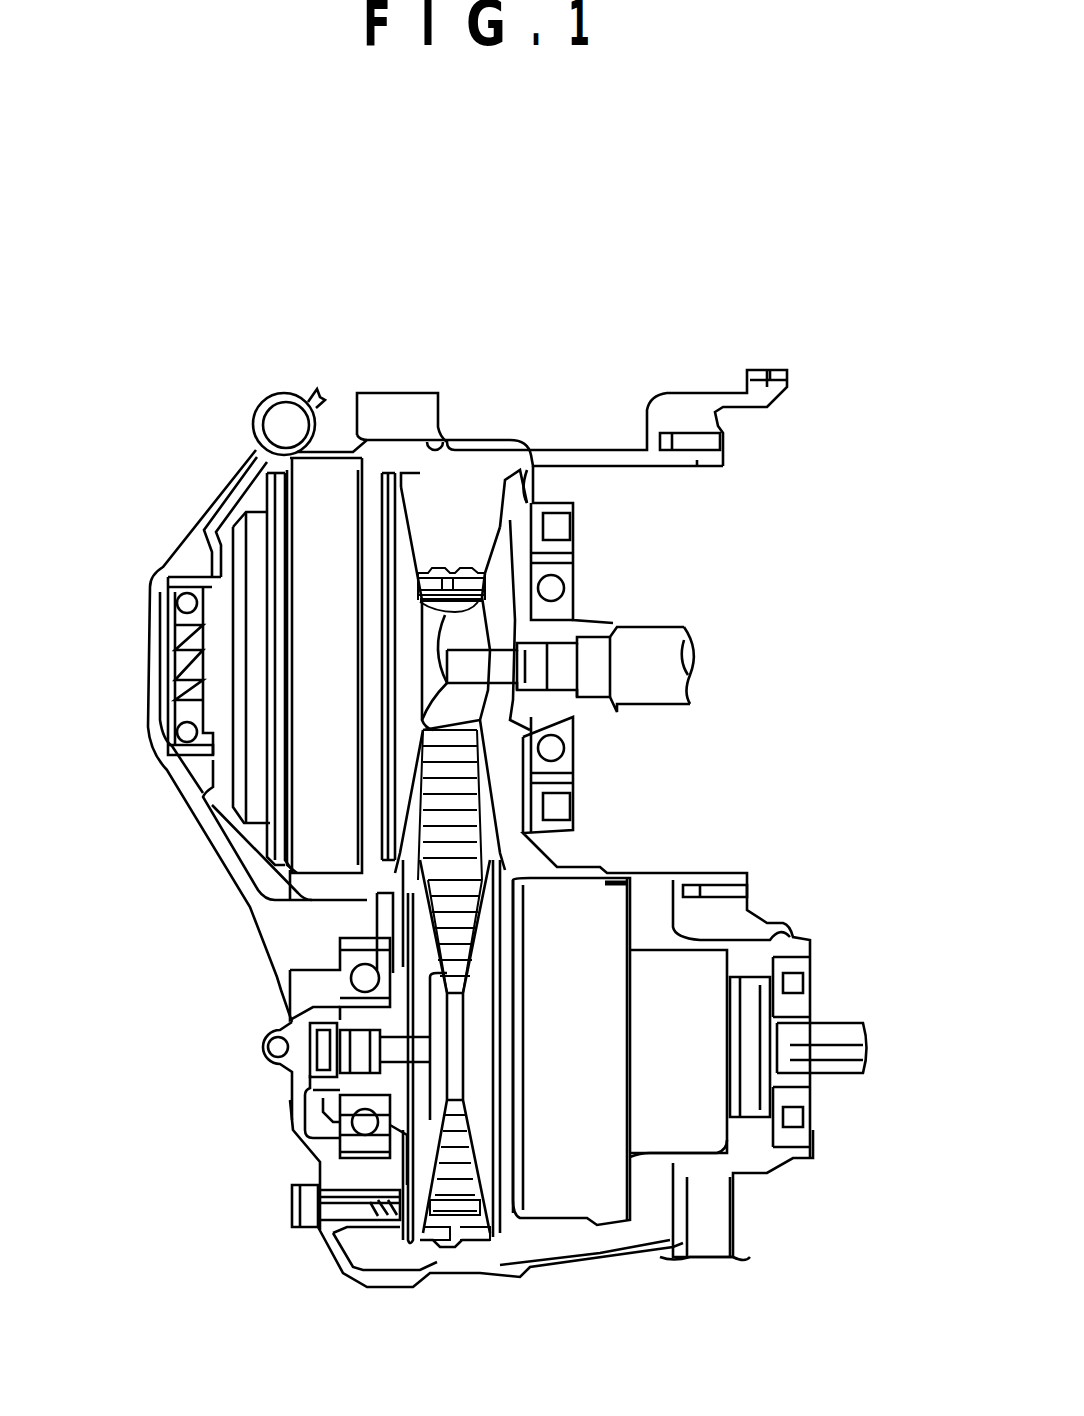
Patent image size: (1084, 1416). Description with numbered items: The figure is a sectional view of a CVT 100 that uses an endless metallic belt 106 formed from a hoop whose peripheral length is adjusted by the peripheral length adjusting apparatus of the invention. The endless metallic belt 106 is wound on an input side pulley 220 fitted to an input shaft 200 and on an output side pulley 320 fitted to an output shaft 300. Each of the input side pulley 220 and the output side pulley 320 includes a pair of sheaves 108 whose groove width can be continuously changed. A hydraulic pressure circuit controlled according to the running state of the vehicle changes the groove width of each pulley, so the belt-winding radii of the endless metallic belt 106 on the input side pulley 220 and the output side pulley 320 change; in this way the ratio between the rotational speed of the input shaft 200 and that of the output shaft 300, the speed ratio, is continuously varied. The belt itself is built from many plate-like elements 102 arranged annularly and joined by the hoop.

The CVT 100 is at (645, 285).
The element 102 is at (438, 590).
The endless metallic belt 106 is at (453, 1247).
The sheave 108 is at (405, 545).
The input shaft 200 is at (655, 640).
The input side pulley 220 is at (510, 467).
The output shaft 300 is at (848, 1030).
The output side pulley 320 is at (405, 1245).